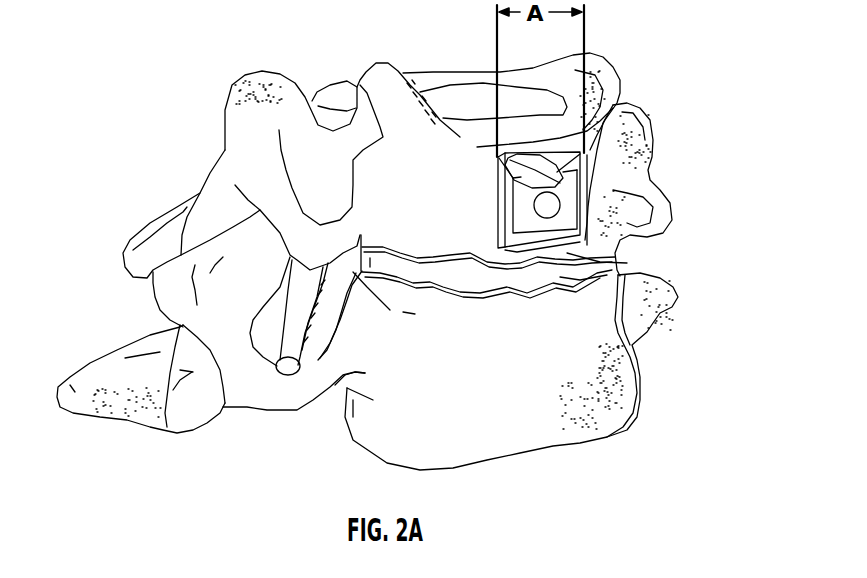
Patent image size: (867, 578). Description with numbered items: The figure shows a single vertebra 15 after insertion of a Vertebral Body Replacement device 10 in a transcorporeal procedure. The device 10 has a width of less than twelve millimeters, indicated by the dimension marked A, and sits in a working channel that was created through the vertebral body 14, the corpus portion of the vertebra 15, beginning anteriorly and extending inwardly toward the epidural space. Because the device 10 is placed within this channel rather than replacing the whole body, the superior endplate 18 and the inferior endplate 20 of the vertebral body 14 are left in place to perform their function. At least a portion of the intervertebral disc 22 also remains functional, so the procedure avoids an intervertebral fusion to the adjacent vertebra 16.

The Vertebral Body Replacement device 10 is at (597, 199).
The vertebral body 14 is at (297, 251).
The vertebra 15 is at (330, 160).
The adjacent vertebra 16 is at (269, 361).
The superior endplate 18 is at (530, 78).
The inferior endplate 20 is at (646, 189).
The intervertebral disc 22 is at (524, 371).